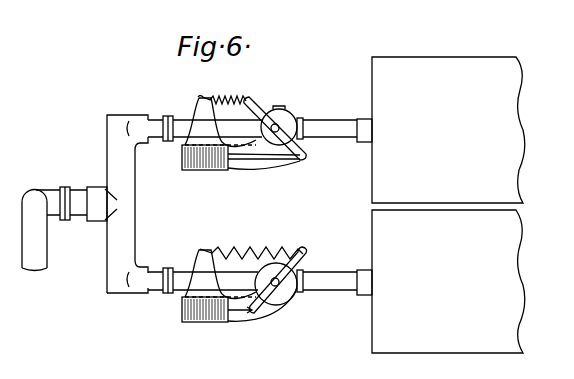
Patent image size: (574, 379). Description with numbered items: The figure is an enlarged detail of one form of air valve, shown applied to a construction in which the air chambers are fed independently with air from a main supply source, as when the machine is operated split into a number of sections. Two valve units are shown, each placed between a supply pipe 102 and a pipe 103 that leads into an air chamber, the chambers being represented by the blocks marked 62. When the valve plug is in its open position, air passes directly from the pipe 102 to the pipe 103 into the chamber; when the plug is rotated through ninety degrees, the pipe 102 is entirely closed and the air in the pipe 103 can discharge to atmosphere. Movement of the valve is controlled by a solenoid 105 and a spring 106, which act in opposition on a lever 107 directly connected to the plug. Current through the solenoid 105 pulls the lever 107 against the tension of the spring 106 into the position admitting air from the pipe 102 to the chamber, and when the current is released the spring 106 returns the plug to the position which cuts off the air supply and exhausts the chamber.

The burner unit 62 is at (448, 205).
The pipe 102 is at (176, 124).
The pipe 103 is at (334, 128).
The solenoid 105 is at (221, 171).
The spring 106 is at (229, 98).
The lever 107 is at (302, 153).